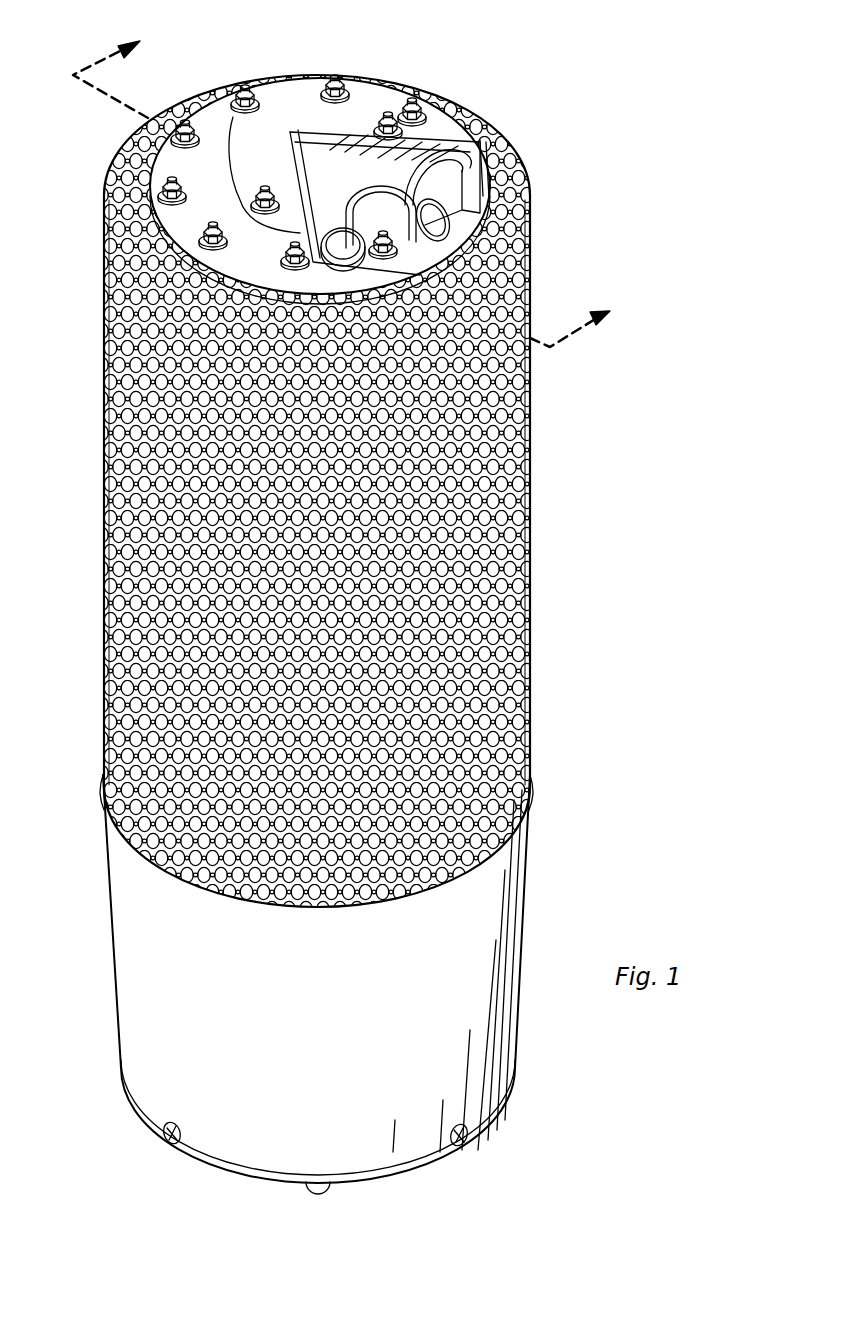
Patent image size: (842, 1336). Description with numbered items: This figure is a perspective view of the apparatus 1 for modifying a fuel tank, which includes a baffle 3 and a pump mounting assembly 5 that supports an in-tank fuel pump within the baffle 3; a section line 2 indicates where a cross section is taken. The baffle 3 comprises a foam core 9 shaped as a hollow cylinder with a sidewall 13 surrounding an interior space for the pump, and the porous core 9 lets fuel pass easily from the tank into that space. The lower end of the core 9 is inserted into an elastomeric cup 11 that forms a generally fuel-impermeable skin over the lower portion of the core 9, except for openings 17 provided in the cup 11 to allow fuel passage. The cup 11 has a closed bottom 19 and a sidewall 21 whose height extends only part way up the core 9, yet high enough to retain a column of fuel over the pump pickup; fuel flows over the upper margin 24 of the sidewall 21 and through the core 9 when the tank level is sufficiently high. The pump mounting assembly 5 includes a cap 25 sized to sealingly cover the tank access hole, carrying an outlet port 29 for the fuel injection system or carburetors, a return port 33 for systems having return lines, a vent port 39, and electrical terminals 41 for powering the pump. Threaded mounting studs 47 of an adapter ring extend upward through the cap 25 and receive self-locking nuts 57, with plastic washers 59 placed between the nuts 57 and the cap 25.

The apparatus for modifying a fuel tank 1 is at (622, 120).
The section line 2 is at (354, 182).
The baffle 3 is at (548, 240).
The pump mounting assembly 5 is at (398, 72).
The foam core 9 is at (532, 440).
The elastomeric cup 11 is at (530, 855).
The sidewall 13 is at (532, 500).
The openings 17 is at (170, 1146).
The closed bottom 19 is at (328, 1183).
The sidewall 21 is at (527, 925).
The upper margin 24 is at (535, 775).
The cap 25 is at (300, 78).
The outlet port 29 is at (510, 165).
The return port 33 is at (322, 262).
The vent port 39 is at (420, 190).
The terminals 41 is at (265, 188).
The threaded mounting studs 47 is at (245, 88).
The self-locking nuts 57 is at (150, 160).
The plastic washers 59 is at (165, 208).